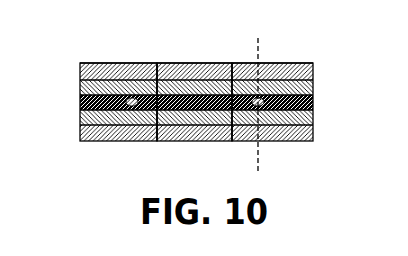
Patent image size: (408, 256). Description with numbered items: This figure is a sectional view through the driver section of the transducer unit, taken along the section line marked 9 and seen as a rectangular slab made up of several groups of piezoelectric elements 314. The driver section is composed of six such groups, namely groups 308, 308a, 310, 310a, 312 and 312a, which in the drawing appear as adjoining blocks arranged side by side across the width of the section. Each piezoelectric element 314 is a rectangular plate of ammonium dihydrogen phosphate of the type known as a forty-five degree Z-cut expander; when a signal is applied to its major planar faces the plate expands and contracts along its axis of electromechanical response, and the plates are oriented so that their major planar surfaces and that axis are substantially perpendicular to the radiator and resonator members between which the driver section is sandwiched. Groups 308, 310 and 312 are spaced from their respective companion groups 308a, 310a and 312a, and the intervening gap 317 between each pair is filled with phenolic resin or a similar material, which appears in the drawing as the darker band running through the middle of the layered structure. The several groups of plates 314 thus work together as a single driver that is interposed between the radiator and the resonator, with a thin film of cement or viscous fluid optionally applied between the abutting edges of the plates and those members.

The group of piezoelectric elements 308 is at (117, 144).
The group of piezoelectric elements 308a is at (117, 61).
The group of piezoelectric elements 310 is at (203, 145).
The group of piezoelectric elements 310a is at (213, 61).
The group of piezoelectric elements 312 is at (283, 143).
The group of piezoelectric elements 312a is at (280, 62).
The piezoelectric elements 314 is at (80, 130).
The gap filled with phenolic resin 317 is at (187, 62).
The section line 9- 9 is at (258, 38).